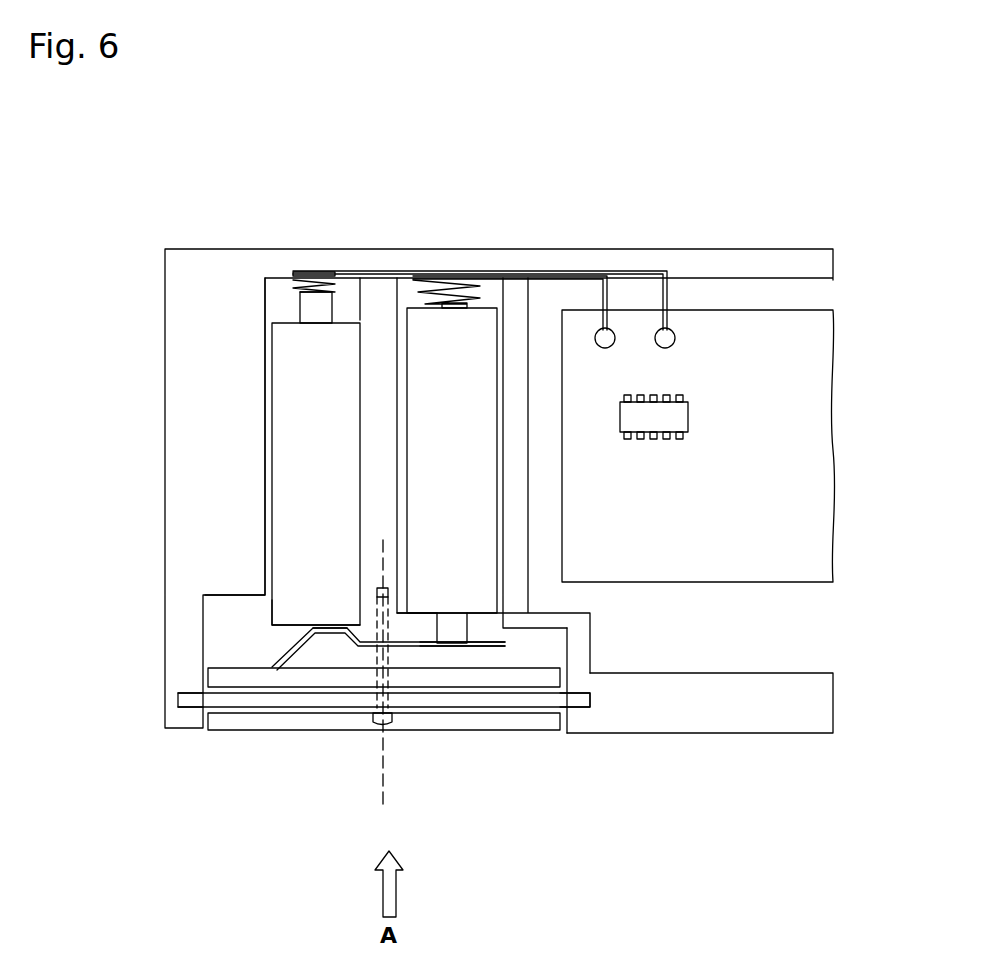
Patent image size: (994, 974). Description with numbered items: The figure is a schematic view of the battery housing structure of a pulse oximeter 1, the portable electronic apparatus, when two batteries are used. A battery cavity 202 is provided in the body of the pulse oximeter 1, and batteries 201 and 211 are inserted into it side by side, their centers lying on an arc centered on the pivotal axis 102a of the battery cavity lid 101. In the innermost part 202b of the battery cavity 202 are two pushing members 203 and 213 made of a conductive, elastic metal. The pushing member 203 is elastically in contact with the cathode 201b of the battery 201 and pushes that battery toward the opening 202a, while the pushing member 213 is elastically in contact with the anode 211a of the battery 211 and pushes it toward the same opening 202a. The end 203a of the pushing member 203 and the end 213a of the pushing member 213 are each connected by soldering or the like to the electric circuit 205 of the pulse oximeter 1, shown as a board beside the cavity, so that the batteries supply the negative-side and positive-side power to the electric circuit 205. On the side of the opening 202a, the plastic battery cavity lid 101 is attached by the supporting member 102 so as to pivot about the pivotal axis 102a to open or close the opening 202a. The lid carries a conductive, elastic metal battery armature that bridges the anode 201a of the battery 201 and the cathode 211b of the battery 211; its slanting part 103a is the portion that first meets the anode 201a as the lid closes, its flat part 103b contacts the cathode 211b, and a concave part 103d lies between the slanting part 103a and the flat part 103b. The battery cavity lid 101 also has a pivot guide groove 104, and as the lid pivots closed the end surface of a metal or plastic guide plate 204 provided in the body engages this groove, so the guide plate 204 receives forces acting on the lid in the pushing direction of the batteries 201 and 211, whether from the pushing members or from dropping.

The pulse oximeter 1 is at (760, 722).
The battery cavity lid 101 is at (432, 722).
The supporting member 102 is at (373, 717).
The pivotal axis 102a is at (380, 785).
The slanting part 103a is at (280, 657).
The flat part 103b is at (480, 660).
The concave part 103d is at (330, 638).
The pivot guide groove 104 is at (265, 710).
The battery 201 is at (460, 520).
The anode 201a is at (455, 632).
The cathode 201b is at (423, 327).
The battery cavity 202 is at (383, 381).
The opening 202a is at (408, 623).
The innermost part 202b is at (380, 303).
The pushing member 203 is at (480, 270).
The end 203a is at (608, 313).
The guide plate 204 is at (590, 700).
The electric circuit 205 is at (777, 337).
The battery 211 is at (295, 425).
The anode 211a is at (313, 312).
The cathode 211b is at (330, 625).
The pushing member 213 is at (303, 280).
The end 213a is at (672, 317).